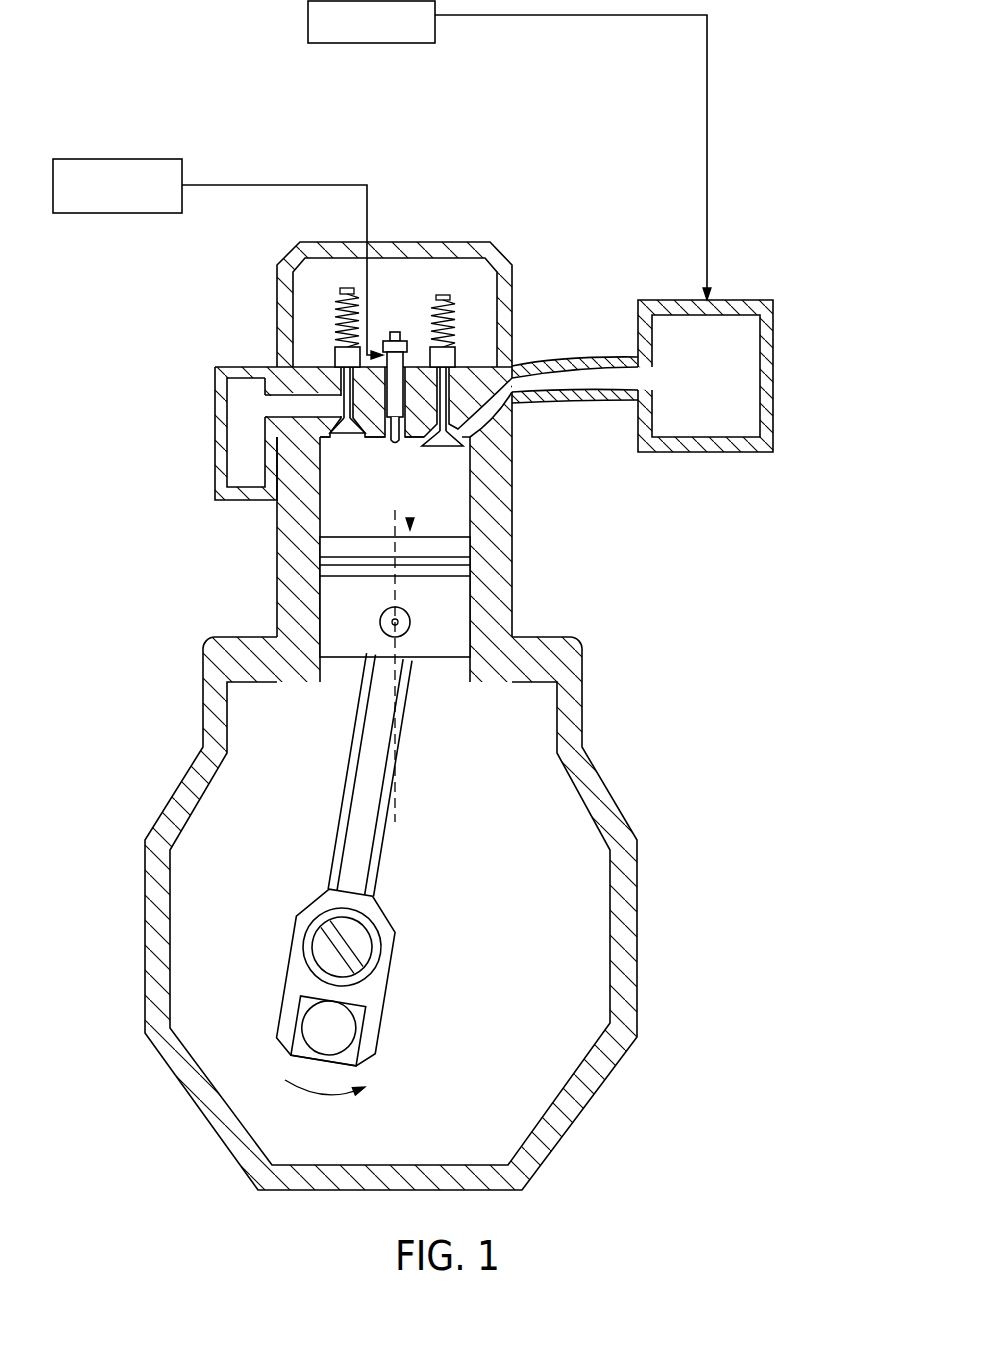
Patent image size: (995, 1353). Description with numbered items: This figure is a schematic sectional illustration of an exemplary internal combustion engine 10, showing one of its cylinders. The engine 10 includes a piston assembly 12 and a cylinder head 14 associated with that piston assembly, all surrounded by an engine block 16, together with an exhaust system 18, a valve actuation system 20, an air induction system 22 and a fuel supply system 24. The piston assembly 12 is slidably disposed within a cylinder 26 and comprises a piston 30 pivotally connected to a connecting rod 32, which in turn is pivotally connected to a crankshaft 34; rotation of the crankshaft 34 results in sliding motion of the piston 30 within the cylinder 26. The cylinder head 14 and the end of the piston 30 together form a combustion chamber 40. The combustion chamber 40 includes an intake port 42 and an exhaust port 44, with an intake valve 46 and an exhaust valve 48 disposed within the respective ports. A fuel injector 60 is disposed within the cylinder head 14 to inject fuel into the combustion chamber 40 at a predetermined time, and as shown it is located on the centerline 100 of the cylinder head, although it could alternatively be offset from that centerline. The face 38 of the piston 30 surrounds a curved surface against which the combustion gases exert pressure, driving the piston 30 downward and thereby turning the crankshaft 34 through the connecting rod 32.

The internal combustion engine 10 is at (432, 691).
The piston assembly 12 is at (379, 872).
The cylinder head 14 is at (505, 420).
The engine block 16 is at (205, 713).
The exhaust system 18 is at (181, 419).
The valve actuation system 20 is at (350, 283).
The air induction system 22 is at (754, 165).
The fuel supply system 24 is at (292, 158).
The cylinder 26 is at (468, 502).
The piston 30 is at (458, 547).
The connecting rod 32 is at (362, 860).
The crankshaft 34 is at (364, 990).
The face of piston 38 is at (410, 527).
The combustion chamber 40 is at (335, 503).
The intake port 42 is at (456, 405).
The exhaust port 44 is at (335, 405).
The intake valve 46 is at (445, 444).
The exhaust valve 48 is at (346, 434).
The fuel injector 60 is at (395, 330).
The centerline 100 is at (398, 800).